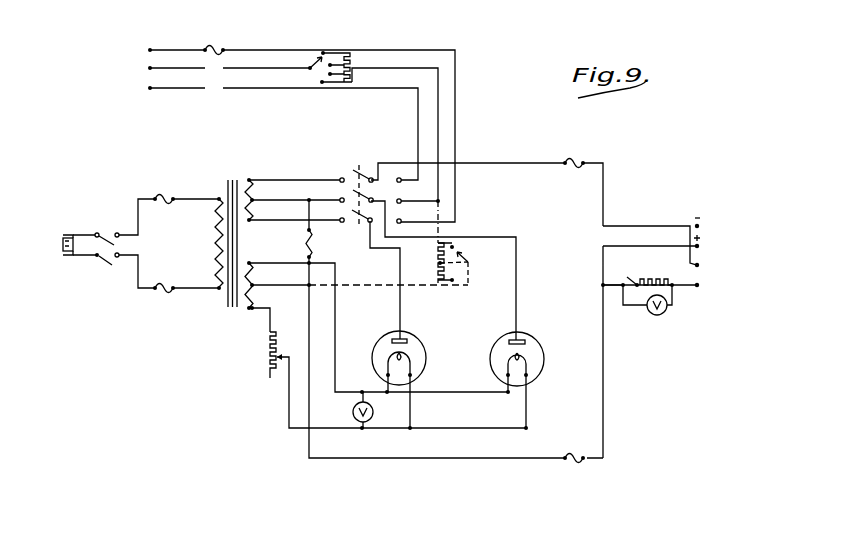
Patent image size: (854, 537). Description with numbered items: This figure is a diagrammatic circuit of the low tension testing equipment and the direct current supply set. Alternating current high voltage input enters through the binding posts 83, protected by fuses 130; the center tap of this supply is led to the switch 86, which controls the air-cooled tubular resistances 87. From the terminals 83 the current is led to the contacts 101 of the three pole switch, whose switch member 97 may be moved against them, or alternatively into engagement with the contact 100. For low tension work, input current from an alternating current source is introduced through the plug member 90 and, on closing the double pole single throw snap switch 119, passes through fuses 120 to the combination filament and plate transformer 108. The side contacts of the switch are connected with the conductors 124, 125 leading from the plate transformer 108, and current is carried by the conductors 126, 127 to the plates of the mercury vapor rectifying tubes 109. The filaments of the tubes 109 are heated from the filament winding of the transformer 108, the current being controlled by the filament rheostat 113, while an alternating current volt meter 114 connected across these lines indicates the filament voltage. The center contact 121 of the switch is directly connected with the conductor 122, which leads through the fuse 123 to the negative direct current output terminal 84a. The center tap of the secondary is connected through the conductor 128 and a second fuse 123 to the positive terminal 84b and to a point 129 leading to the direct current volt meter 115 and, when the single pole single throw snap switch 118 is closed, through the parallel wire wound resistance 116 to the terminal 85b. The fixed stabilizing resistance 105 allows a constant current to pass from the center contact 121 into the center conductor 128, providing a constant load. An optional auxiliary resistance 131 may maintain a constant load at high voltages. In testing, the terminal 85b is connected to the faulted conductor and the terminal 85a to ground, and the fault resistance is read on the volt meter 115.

The fuses 130 is at (214, 46).
The binding posts 83 is at (150, 88).
The switch 86 is at (318, 55).
The tubular resistances 87 is at (347, 53).
The fuses 120 is at (160, 195).
The plug member 90 is at (62, 246).
The double pole single throw snap switch 119 is at (111, 265).
The combination filament and plate transformer 108 is at (226, 186).
The conductor 124 is at (261, 168).
The center contact 121 is at (339, 198).
The conductor 125 is at (252, 221).
The fixed stabilizing resistance 105 is at (314, 240).
The conductor 128 is at (308, 313).
The contact 100 is at (357, 172).
The switch 97 is at (364, 171).
The contact 101 is at (399, 177).
The conductor 122 is at (490, 163).
The fuse 123 is at (590, 150).
The conductor 126 is at (518, 247).
The auxiliary resistance 131 is at (469, 272).
The conductor 127 is at (402, 313).
The mercury vapor rectifying tubes 109 is at (413, 344).
The filament rheostat 113 is at (267, 352).
The alternating current volt meter 114 is at (352, 412).
The point 129 is at (601, 287).
The single pole single throw snap switch 118 is at (641, 271).
The wire wound resistance 116 is at (680, 270).
The direct current volt meter 115 is at (651, 315).
The output terminal 84a is at (695, 223).
The output terminal 84b is at (699, 244).
The terminal 85a is at (699, 266).
The terminal 85b is at (698, 288).